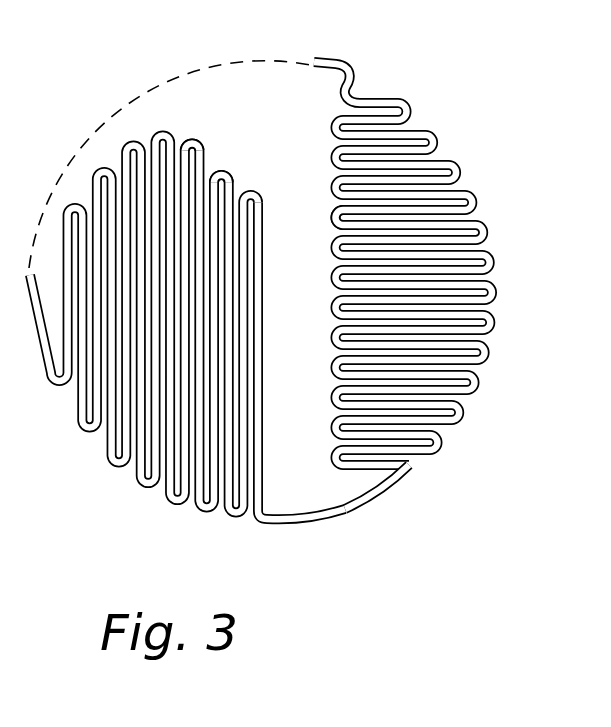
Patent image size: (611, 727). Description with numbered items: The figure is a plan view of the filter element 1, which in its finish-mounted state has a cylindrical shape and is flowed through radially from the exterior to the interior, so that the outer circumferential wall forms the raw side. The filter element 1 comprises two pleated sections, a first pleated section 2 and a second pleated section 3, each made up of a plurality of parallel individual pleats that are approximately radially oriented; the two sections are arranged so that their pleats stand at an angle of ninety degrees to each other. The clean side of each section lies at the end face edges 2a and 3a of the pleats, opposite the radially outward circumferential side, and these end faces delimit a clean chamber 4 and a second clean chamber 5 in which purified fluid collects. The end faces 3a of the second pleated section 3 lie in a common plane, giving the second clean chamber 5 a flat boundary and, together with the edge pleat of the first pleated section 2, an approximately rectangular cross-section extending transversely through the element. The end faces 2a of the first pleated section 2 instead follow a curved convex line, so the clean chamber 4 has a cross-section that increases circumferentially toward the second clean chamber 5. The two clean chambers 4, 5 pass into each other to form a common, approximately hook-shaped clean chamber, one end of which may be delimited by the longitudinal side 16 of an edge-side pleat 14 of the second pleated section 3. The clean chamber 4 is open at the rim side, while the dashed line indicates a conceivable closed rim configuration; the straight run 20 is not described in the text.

The filter element 1 is at (418, 81).
The first pleated section 2 is at (92, 470).
The end face edges of the first pleated section 2a is at (193, 137).
The second pleated section 3 is at (508, 341).
The end face edges of the second pleated section 3a is at (330, 215).
The clean chamber 4 is at (187, 100).
The second clean chamber 5 is at (299, 463).
The edge-side pleat 14 is at (388, 492).
The longitudinal side 16 is at (328, 514).
The straight vertical tube run 20 is at (263, 260).